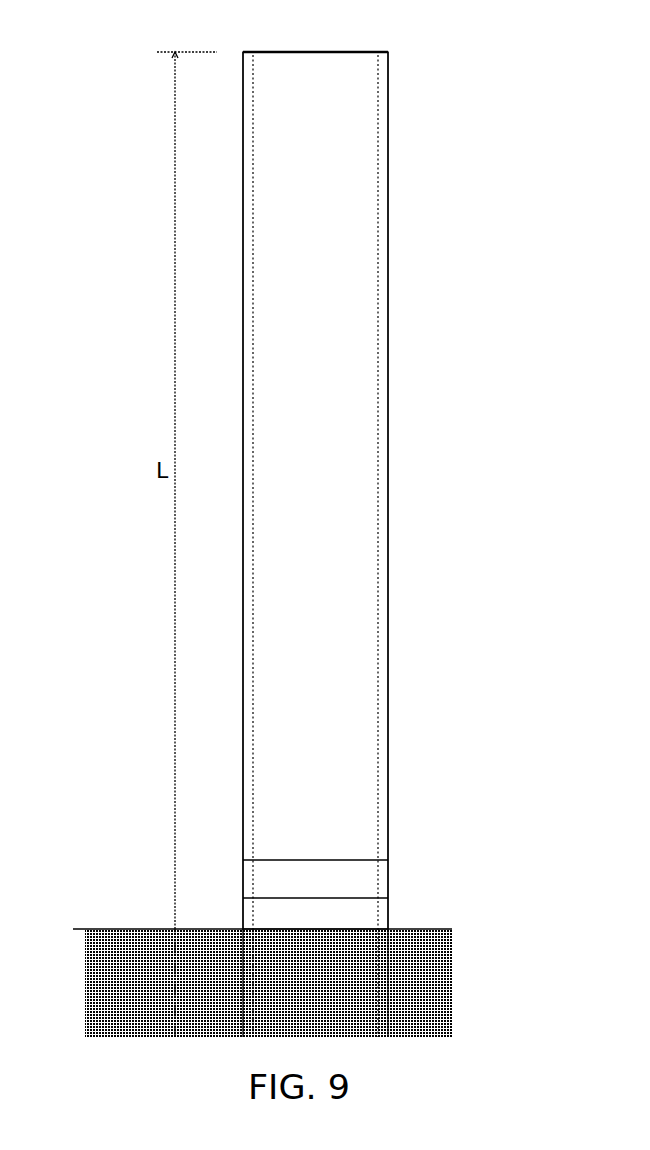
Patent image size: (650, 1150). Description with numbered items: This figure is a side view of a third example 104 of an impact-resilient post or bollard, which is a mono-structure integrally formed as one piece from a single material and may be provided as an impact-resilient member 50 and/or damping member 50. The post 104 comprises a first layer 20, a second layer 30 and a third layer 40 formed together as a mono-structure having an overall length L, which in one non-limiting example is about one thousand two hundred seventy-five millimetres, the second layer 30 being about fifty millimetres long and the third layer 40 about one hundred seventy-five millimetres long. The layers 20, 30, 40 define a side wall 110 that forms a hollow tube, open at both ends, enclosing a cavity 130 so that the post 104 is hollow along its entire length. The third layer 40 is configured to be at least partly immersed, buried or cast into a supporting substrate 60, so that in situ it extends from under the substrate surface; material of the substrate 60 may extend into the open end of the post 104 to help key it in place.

The first layer 20 is at (390, 497).
The second layer 30 is at (390, 876).
The third layer 40 is at (390, 993).
The impact-resilient member 50 is at (390, 152).
The supporting substrate 60 is at (103, 928).
The third example of the impact-resilient post 104 is at (392, 52).
The side wall 110 is at (381, 268).
The cavity 130 is at (358, 611).